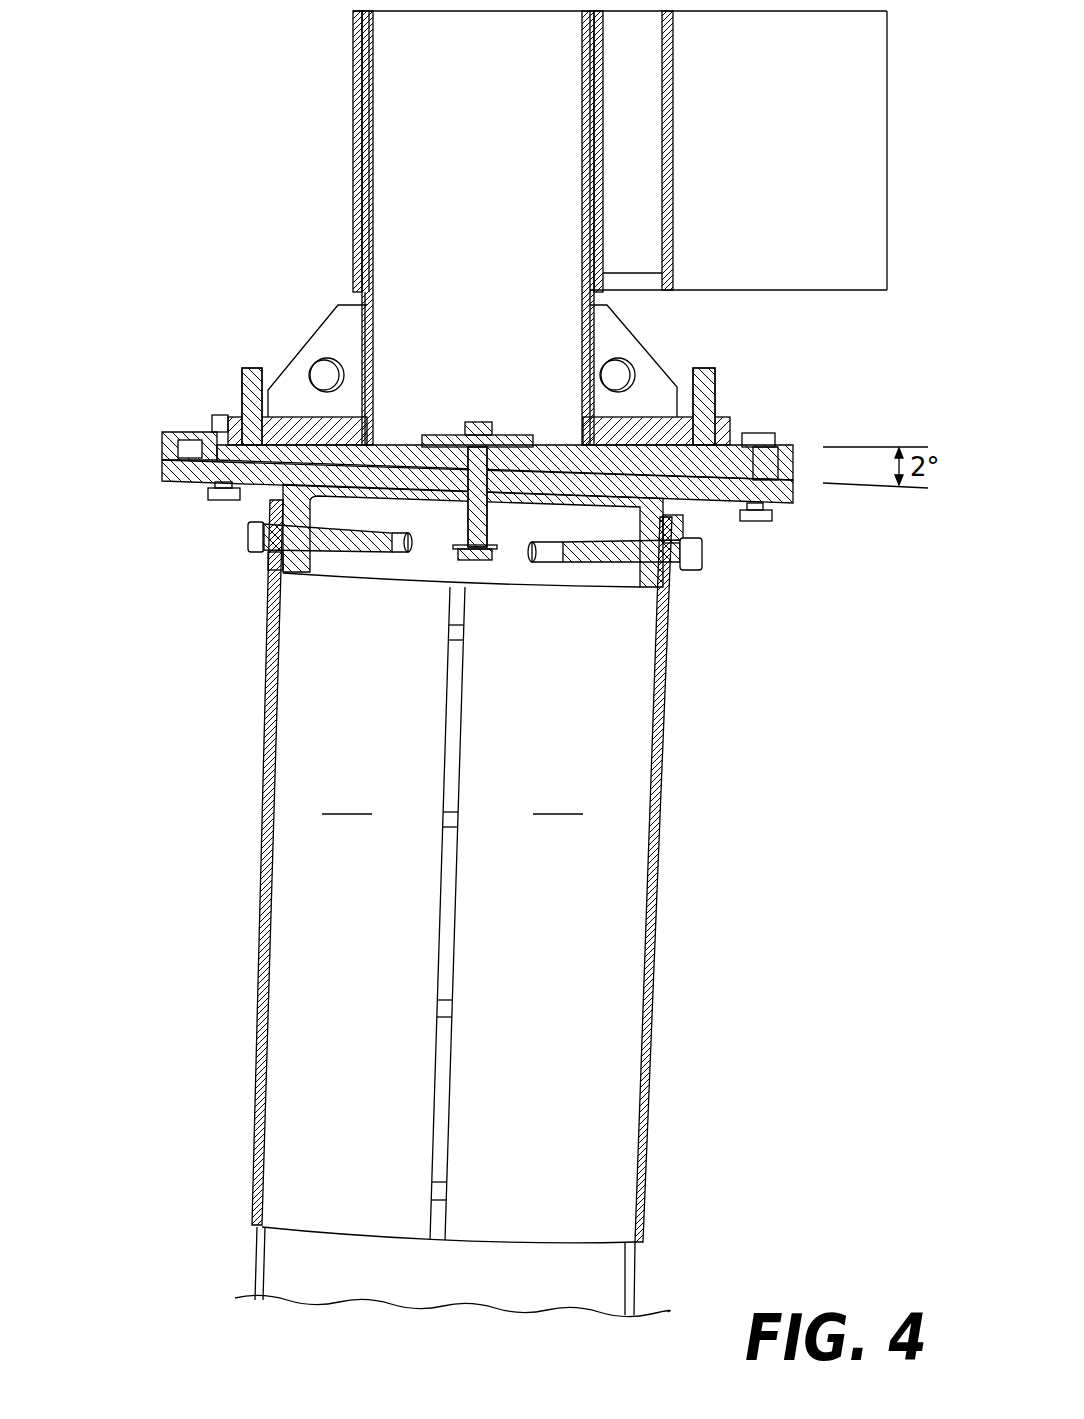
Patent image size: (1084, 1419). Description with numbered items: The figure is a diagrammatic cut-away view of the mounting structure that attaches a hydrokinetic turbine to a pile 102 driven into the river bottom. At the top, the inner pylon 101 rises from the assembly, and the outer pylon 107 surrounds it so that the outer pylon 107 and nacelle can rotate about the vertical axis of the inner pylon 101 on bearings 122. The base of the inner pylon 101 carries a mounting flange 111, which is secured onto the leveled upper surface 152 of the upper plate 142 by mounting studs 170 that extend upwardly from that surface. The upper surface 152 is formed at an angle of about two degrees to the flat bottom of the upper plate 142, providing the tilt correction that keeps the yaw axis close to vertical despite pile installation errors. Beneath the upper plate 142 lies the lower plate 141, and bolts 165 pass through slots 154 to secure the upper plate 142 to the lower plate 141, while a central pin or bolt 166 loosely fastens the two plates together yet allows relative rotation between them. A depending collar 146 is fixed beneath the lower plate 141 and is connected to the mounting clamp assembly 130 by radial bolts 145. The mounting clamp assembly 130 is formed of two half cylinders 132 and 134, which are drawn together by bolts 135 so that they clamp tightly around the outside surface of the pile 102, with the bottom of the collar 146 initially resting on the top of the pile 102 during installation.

The inner pylon 101 is at (392, 166).
The pile 102 is at (603, 1277).
The outer pylon 107 is at (693, 268).
The mounting flange 111 is at (307, 423).
The bearings 122 is at (355, 212).
The mounting clamp assembly 130 is at (677, 921).
The half cylinder 132 is at (312, 862).
The half cylinder 134 is at (608, 878).
The bolts 135 is at (452, 1002).
The tilted plate 141 is at (163, 471).
The upper plate 142 is at (163, 428).
The bolts 145 is at (250, 548).
The collar 146 is at (317, 568).
The upper surface 152 is at (243, 423).
The slots 154 is at (192, 427).
The bolts 165 is at (215, 502).
The central pin or bolt 166 is at (480, 535).
The mounting studs 170 is at (713, 367).